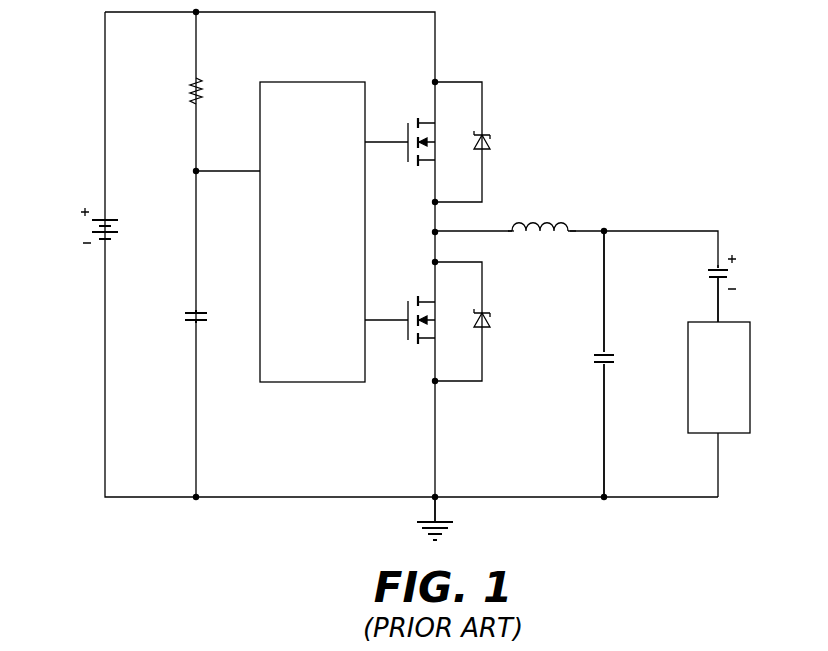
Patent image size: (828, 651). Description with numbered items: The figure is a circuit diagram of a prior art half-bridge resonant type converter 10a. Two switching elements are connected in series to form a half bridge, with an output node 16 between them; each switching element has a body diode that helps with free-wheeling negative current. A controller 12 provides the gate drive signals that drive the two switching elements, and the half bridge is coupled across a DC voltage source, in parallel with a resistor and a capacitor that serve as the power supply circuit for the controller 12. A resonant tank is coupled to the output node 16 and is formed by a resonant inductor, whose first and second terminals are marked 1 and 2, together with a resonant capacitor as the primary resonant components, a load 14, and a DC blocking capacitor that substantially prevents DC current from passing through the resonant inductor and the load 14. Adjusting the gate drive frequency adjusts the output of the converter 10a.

The half-bridge resonant type converter 10a is at (660, 68).
The controller 12 is at (298, 365).
The load 14 is at (740, 413).
The output node 16 is at (434, 232).
The first terminal of inductor L1 1 is at (504, 217).
The second terminal of inductor L1 2 is at (580, 217).